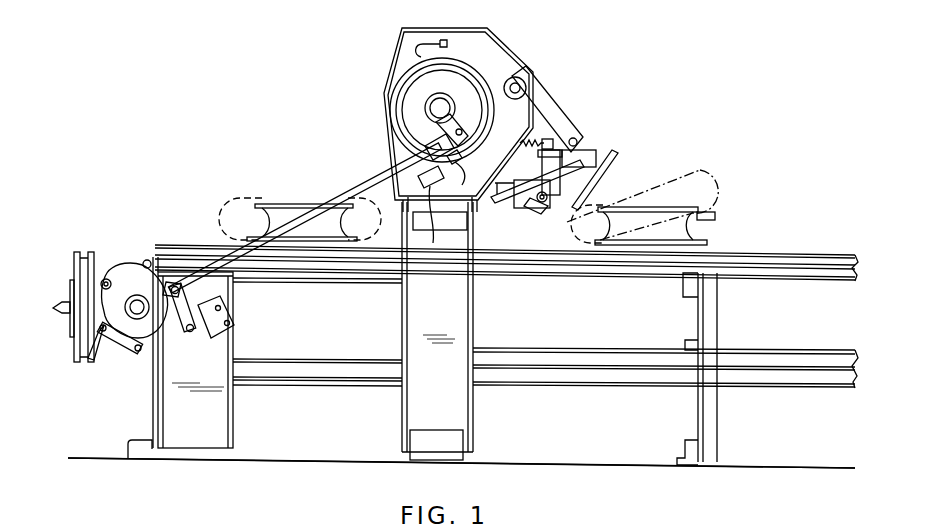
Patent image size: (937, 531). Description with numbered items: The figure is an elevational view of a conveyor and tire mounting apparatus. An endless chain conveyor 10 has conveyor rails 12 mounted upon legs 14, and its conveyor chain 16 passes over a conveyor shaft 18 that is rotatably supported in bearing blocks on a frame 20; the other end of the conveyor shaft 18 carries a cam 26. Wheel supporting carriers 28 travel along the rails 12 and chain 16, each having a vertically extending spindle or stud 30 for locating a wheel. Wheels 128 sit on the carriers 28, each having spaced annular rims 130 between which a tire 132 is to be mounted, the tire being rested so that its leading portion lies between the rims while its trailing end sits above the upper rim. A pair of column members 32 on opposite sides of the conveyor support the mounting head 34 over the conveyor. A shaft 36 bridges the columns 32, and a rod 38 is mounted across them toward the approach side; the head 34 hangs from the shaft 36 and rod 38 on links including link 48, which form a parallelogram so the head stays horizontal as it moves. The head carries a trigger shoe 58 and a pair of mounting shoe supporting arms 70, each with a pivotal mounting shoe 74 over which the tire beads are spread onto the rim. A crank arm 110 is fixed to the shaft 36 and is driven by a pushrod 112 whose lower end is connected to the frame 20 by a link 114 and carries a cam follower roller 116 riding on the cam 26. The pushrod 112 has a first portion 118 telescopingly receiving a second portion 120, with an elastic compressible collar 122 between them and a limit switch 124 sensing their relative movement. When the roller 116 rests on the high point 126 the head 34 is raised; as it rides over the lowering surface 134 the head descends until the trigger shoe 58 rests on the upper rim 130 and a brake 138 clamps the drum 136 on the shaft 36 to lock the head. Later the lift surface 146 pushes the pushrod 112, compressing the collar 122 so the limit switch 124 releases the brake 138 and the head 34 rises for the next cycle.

The endless chain conveyor 10 is at (812, 240).
The conveyor rails 12 is at (823, 253).
The legs 14 is at (712, 340).
The conveyor chain 16 is at (123, 343).
The conveyor shaft 18 is at (113, 343).
The frame 20 is at (208, 429).
The cam 26 is at (148, 347).
The wheel supporting carriers 28 is at (83, 252).
The spindle or stud 30 is at (65, 312).
The column members 32 is at (447, 398).
The mounting head 34 is at (650, 132).
The shaft 36 is at (445, 107).
The rod 38 is at (460, 131).
The link 48 is at (535, 142).
The trigger shoe 58 is at (545, 210).
The mounting shoe supporting arms 70 is at (530, 175).
The mounting shoe 74 is at (545, 203).
The crank arm 110 is at (557, 118).
The pushrod 112 is at (344, 199).
The link 114 is at (188, 330).
The cam follower roller 116 is at (177, 280).
The first portion 118 is at (297, 225).
The second portion 120 is at (459, 164).
The elastic compressible collar 122 is at (427, 153).
The limit switch 124 is at (434, 226).
The high point 126 is at (113, 267).
The wheels 128 is at (703, 201).
The annular rims 130 is at (707, 242).
The tires 132 is at (673, 173).
The lowering surface 134 is at (141, 268).
The drum 136 is at (443, 80).
The brake 138 is at (407, 78).
The lift surface 146 is at (101, 282).